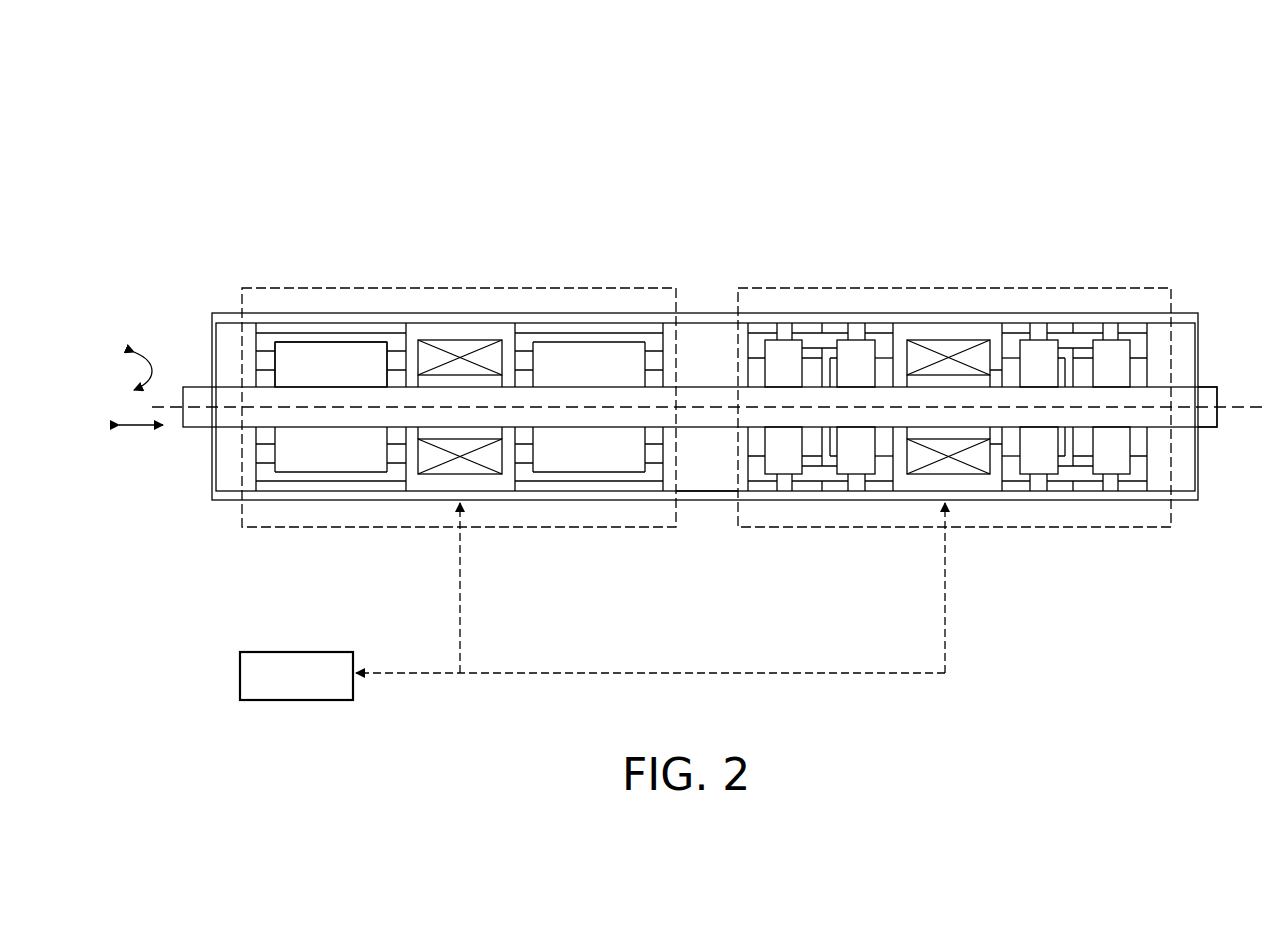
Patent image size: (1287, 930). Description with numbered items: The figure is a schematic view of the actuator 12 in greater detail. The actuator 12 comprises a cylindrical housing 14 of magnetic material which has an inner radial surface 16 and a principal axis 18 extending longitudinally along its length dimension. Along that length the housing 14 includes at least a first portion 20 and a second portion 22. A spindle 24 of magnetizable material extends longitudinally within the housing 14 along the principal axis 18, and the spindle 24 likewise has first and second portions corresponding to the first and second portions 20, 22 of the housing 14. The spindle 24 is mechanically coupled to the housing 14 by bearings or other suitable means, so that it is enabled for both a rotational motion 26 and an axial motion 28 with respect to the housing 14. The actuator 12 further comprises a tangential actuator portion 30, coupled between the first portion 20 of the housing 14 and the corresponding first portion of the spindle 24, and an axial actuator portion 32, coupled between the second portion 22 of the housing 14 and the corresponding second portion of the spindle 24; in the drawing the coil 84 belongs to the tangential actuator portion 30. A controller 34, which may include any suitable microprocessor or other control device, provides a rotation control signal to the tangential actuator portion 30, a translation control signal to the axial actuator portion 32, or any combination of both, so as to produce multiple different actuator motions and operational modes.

The actuator 12 is at (1086, 145).
The cylindrical housing 14 is at (216, 312).
The inner radial surface 16 is at (716, 483).
The principal axis 18 is at (1249, 407).
The first portion 20 is at (492, 312).
The second portion 22 is at (958, 289).
The spindle 24 is at (191, 421).
The rotational motion 26 is at (139, 346).
The axial motion 28 is at (142, 426).
The tangential actuator portion 30 is at (314, 288).
The axial actuator portion 32 is at (792, 289).
The controller 34 is at (290, 700).
The coil 84 is at (361, 352).